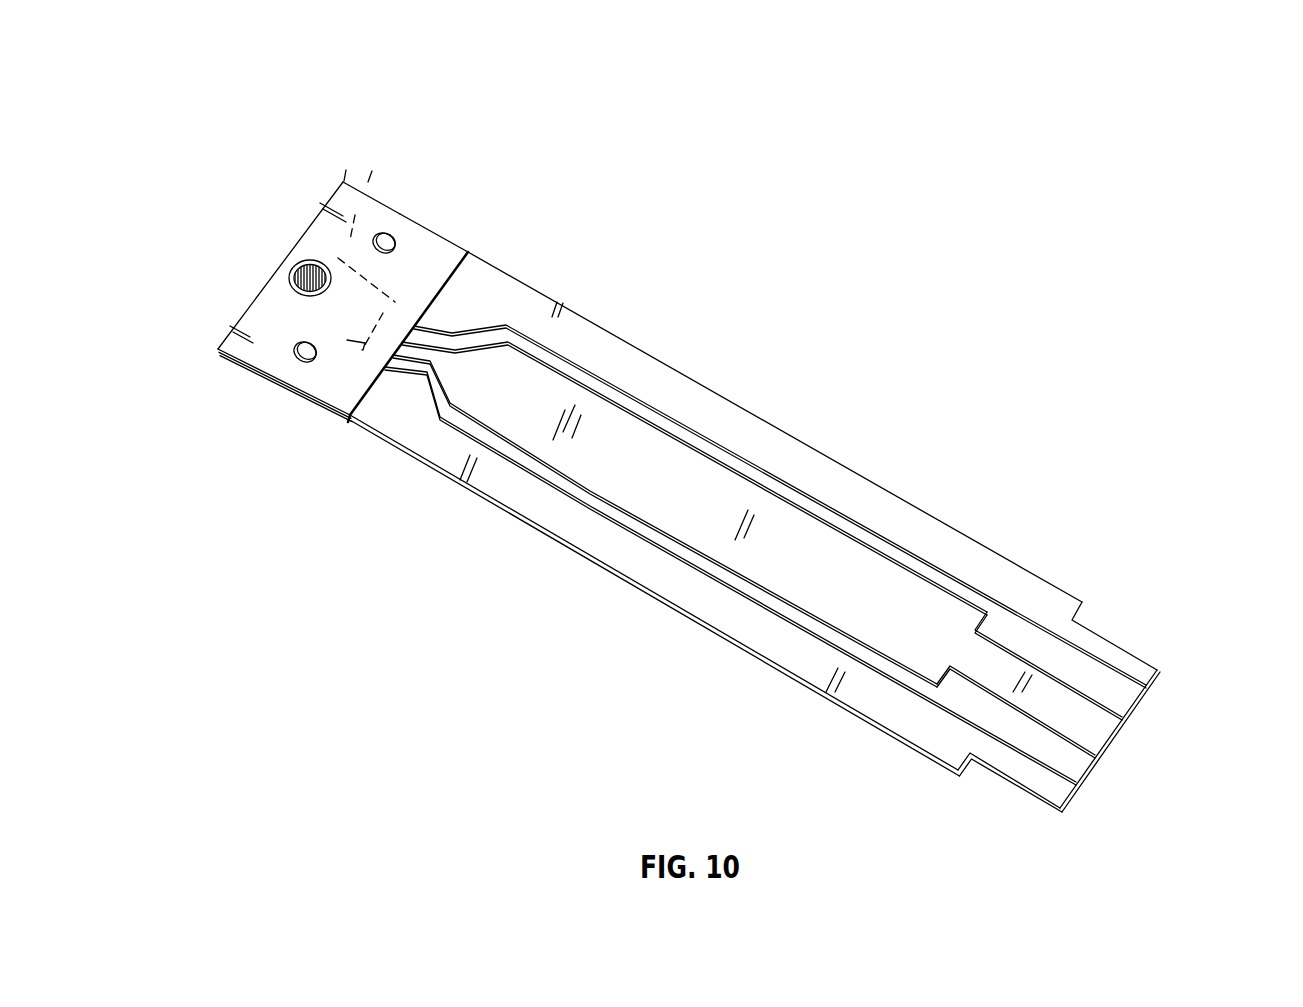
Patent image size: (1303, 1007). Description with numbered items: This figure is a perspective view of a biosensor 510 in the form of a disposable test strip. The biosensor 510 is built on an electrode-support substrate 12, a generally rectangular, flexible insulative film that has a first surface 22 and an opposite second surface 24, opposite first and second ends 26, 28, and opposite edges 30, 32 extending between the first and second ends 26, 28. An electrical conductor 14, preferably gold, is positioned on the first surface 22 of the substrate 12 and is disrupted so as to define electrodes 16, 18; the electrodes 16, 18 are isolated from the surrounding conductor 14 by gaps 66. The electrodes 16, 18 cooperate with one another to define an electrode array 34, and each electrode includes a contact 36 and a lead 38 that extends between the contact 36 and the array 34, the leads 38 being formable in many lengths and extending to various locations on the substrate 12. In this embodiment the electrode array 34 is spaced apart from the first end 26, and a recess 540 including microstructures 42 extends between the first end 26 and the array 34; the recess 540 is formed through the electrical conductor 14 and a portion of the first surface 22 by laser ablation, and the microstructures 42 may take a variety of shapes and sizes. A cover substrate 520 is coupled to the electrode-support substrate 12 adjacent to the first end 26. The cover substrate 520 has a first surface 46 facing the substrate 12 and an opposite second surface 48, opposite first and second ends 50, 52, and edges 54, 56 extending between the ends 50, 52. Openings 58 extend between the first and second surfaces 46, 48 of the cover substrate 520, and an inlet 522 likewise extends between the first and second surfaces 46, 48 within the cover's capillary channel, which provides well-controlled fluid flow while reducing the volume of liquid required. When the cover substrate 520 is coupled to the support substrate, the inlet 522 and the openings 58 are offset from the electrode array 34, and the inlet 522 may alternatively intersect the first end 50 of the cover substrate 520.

The biosensor 510 is at (703, 466).
The electrode-support substrate 12 is at (1113, 737).
The electrical conductor 14 is at (1005, 598).
The electrode 16 is at (510, 443).
The electrode 18 is at (653, 418).
The first surface 22 is at (757, 602).
The second surface 24 is at (807, 688).
The first end 26 is at (222, 350).
The second end 28 is at (1083, 777).
The edge 30 is at (558, 545).
The edge 32 is at (753, 415).
The electrode array 34 is at (393, 273).
The contact 36 is at (972, 703).
The lead 38 is at (867, 653).
The microstructures 42 is at (272, 250).
The first surface 46 is at (340, 414).
The second surface 48 is at (262, 310).
The first end 50 is at (290, 195).
The second end 52 is at (487, 266).
The edge 54 is at (240, 367).
The edge 56 is at (344, 160).
The openings 58 is at (393, 230).
The gaps 66 is at (703, 551).
The cover substrate 520 is at (453, 227).
The inlet 522 is at (289, 279).
The recess 540 is at (378, 160).